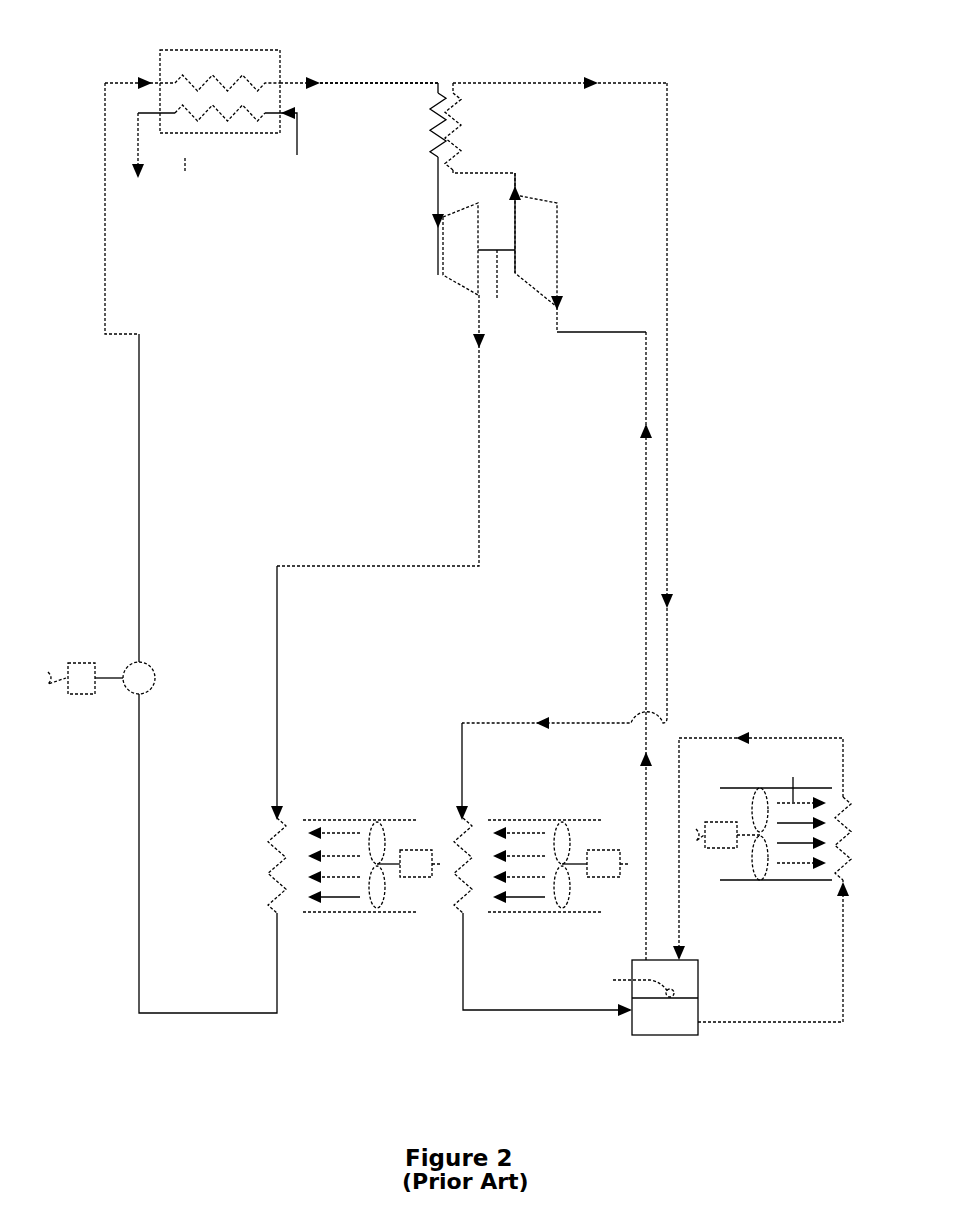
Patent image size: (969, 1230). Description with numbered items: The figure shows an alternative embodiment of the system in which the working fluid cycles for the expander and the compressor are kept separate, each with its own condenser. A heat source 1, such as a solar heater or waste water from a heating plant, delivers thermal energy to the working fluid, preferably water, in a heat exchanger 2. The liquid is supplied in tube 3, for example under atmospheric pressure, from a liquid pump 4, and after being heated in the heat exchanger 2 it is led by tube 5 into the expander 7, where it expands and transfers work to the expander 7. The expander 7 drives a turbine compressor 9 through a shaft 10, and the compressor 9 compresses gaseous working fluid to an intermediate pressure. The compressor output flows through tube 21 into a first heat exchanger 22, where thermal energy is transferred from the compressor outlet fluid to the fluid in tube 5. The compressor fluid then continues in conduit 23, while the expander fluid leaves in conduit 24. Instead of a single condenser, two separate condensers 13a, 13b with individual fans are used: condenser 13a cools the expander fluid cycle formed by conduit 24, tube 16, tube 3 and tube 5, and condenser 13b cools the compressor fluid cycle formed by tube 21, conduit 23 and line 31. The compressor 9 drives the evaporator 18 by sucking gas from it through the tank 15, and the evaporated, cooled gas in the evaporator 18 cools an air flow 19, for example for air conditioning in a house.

The heat source 1 is at (283, 158).
The heat exchanger 2 is at (188, 62).
The tube 3 is at (107, 270).
The liquid pump 4 is at (152, 666).
The tube 5 is at (358, 82).
The expander 7 is at (436, 265).
The turbine compressor 9 is at (560, 246).
The shaft 10 is at (500, 235).
The condenser 13a is at (360, 822).
The condenser 13b is at (515, 822).
The tank 15 is at (650, 1015).
The tube 16 is at (142, 918).
The evaporator 18 is at (850, 800).
The air flow 19 is at (793, 777).
The tube 21 is at (472, 173).
The first heat exchanger 22 is at (462, 110).
The conduit 23 is at (672, 448).
The conduit 24 is at (481, 506).
The line 31 is at (645, 592).